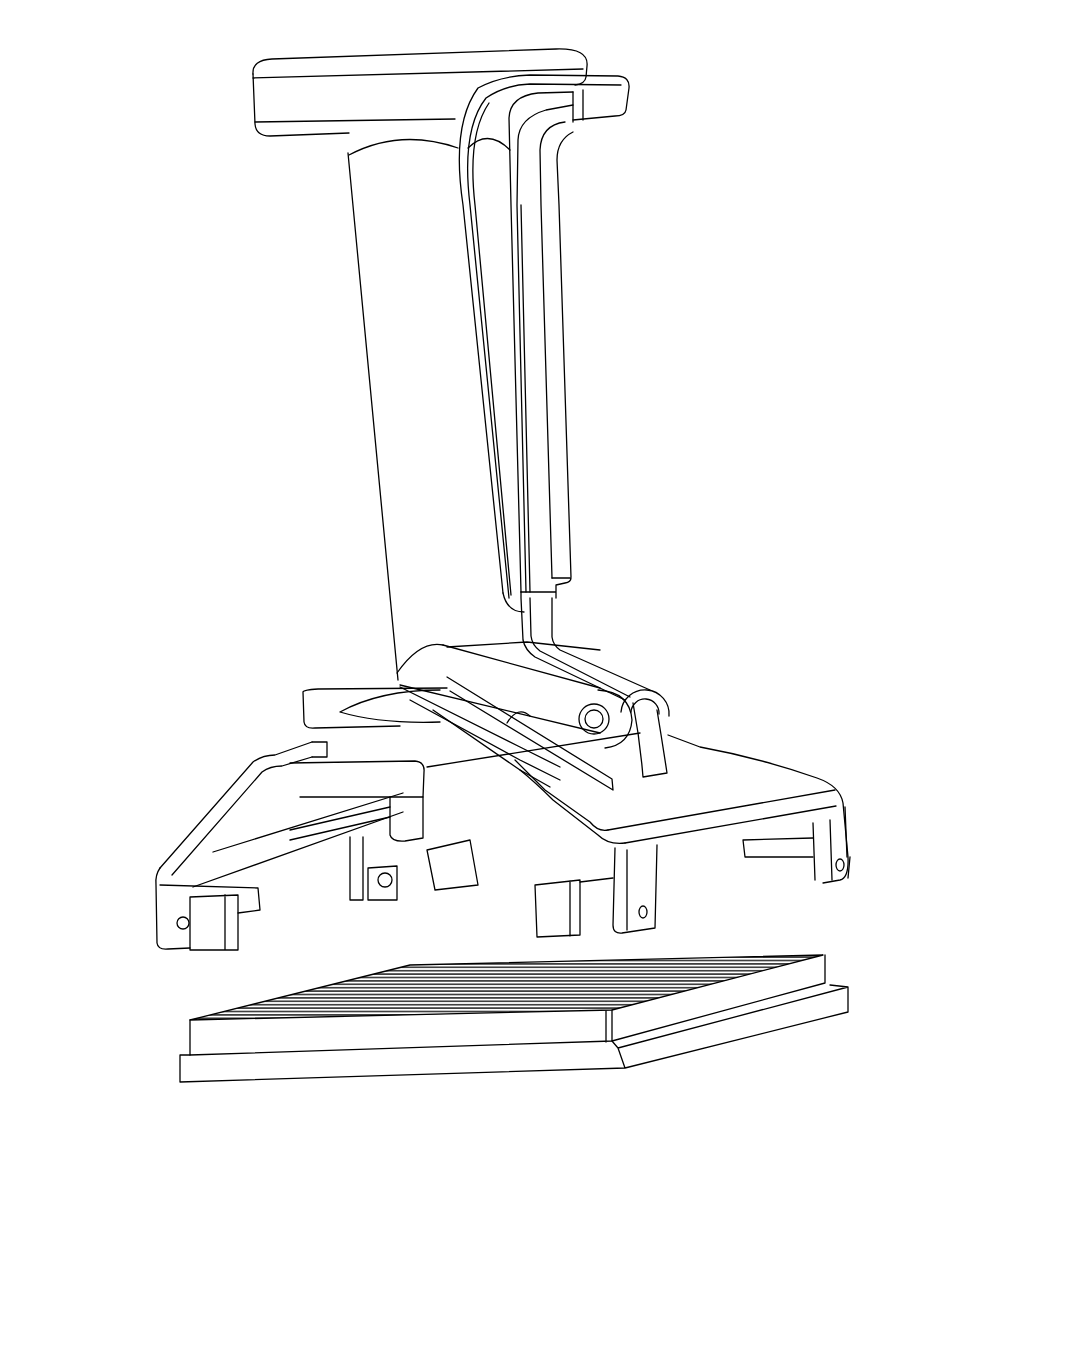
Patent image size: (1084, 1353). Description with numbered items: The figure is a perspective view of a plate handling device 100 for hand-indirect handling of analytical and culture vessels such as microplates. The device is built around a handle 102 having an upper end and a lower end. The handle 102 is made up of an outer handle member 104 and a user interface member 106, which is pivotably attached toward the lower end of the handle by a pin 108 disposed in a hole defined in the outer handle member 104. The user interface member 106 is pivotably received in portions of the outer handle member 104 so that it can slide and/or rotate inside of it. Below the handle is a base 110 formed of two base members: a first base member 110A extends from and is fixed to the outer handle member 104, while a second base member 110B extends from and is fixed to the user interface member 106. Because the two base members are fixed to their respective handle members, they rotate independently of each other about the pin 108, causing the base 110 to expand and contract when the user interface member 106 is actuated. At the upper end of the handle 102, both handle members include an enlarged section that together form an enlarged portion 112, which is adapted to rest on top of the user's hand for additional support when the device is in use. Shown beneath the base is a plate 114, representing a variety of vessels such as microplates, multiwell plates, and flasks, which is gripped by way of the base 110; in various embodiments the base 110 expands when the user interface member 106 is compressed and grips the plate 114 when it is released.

The plate handling device 100 is at (818, 113).
The handle 102 is at (264, 325).
The outer handle member 104 is at (398, 440).
The user interface member 106 is at (572, 336).
The pin 108 is at (602, 705).
The base 110 is at (170, 716).
The first base member 110A is at (204, 800).
The second base member 110B is at (785, 757).
The enlarged portion 112 is at (256, 55).
The plate 114 is at (187, 1018).